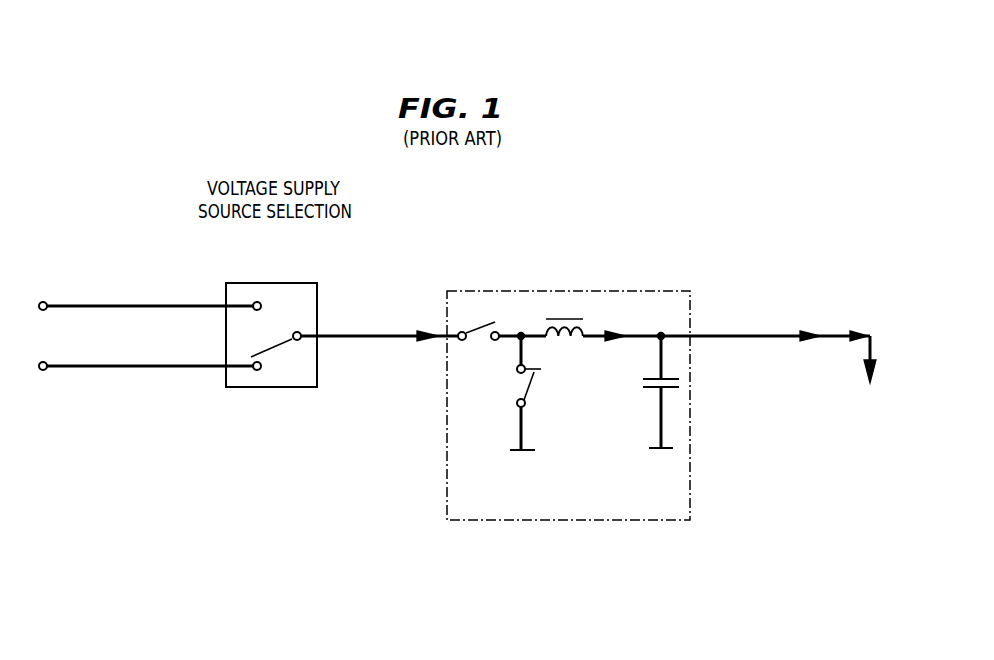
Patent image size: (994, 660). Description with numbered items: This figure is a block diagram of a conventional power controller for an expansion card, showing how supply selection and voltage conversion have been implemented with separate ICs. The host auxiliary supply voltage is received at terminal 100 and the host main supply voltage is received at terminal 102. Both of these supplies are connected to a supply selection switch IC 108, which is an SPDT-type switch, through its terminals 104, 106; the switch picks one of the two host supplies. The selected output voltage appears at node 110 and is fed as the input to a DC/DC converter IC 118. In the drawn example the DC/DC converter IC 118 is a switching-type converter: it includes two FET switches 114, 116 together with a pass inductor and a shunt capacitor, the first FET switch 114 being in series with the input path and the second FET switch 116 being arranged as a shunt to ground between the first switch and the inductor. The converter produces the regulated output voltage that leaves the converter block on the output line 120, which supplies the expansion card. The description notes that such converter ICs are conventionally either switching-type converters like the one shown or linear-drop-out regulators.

The auxiliary supply voltage terminal 100 is at (102, 306).
The main supply voltage terminal 102 is at (102, 366).
The switch terminal 104 is at (255, 302).
The switch terminal 106 is at (257, 371).
The supply selection switch IC 108 is at (318, 366).
The node 110 is at (372, 338).
The FET switch 114 is at (478, 320).
The FET switch 116 is at (508, 388).
The DC/DC converter IC 118 is at (496, 513).
The B3.3 output line 120 is at (731, 343).